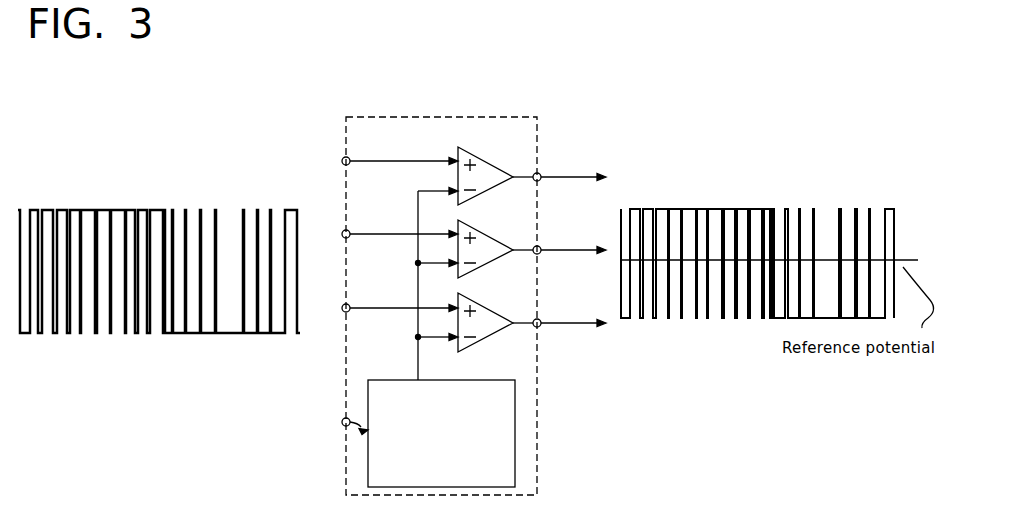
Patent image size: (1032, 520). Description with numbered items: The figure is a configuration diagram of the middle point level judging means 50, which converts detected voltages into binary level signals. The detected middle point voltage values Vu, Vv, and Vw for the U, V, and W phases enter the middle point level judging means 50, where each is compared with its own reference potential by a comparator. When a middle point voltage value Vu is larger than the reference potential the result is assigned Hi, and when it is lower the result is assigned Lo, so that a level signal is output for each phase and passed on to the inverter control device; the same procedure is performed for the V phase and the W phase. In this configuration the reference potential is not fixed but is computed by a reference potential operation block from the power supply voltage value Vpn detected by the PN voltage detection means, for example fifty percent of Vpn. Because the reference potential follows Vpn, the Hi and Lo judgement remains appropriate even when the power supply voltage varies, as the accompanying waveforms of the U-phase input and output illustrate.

The middle point level judging means 50 is at (477, 117).
The middle point voltage value (U phase) Vu is at (125, 208).
The middle point voltage value (V phase) Vv is at (385, 234).
The middle point voltage value (W phase) Vw is at (385, 308).
The power supply voltage value Vpn is at (336, 423).